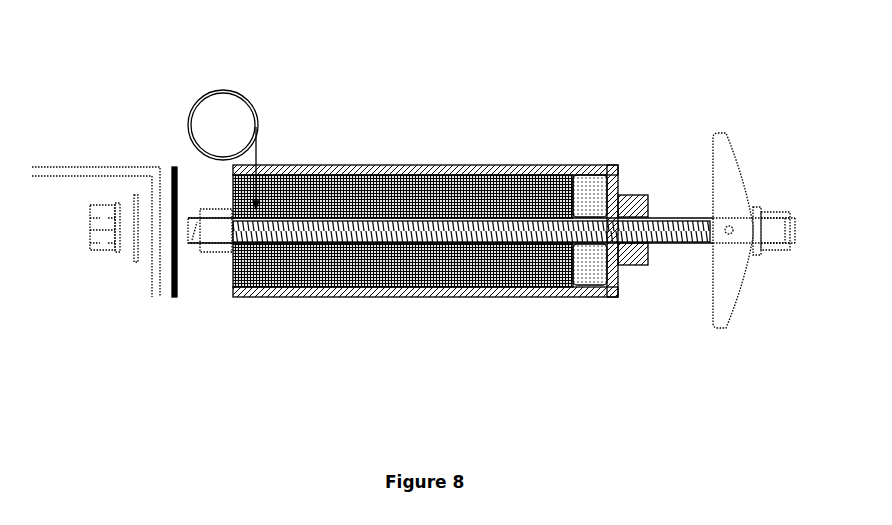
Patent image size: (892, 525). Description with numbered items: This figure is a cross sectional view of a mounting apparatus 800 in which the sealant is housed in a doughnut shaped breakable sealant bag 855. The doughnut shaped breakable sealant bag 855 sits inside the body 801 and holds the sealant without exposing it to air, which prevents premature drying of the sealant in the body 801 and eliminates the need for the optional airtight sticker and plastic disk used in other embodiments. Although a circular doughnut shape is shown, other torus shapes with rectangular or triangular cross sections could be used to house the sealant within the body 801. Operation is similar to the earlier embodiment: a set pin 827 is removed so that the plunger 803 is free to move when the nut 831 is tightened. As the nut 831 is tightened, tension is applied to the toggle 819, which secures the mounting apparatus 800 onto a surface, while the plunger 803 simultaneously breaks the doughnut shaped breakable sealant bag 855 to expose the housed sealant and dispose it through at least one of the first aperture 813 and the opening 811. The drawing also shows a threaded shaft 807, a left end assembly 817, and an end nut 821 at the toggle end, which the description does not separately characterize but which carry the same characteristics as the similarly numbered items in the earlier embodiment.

The mounting apparatus 800 is at (287, 41).
The body 801 is at (318, 165).
The plunger 803 is at (390, 187).
The threaded shaft 807 is at (370, 232).
The opening 811 is at (645, 204).
The first aperture 813 is at (624, 178).
The mounting assembly 817 is at (205, 312).
The toggle 819 is at (738, 183).
The end nut 821 is at (758, 296).
The set pin 827 is at (195, 108).
The nut 831 is at (210, 253).
The doughnut shaped breakable sealant bag 855 is at (585, 187).